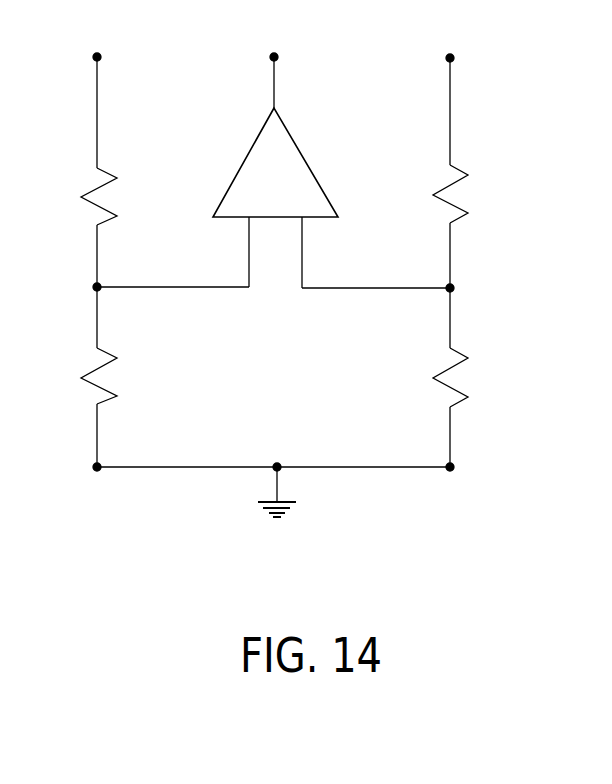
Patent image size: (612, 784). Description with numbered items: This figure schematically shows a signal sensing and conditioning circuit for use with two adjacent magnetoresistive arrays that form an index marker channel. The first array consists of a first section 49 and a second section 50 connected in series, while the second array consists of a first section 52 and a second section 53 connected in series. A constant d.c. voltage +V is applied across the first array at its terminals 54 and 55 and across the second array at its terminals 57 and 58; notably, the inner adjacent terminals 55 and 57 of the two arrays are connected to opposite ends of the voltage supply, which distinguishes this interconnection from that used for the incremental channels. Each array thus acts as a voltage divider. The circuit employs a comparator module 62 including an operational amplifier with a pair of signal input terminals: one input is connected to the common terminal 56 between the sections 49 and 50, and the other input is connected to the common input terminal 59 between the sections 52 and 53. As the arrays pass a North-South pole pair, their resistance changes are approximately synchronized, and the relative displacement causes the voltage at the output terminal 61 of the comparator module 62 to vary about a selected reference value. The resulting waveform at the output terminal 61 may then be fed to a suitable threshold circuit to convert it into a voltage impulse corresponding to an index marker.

The first section of the first MR array 49 is at (78, 196).
The second section of the first MR array 50 is at (77, 376).
The first section of the second MR array 52 is at (472, 194).
The second section of the second MR array 53 is at (470, 377).
The terminal of the first array 54 is at (90, 93).
The terminal of the first array 55 is at (164, 447).
The common terminal 56 is at (151, 286).
The terminal of the second array 57 is at (467, 91).
The terminal of the second array 58 is at (387, 449).
The common input terminal 59 is at (400, 285).
The output terminal 61 is at (291, 74).
The comparator module 62 is at (295, 187).